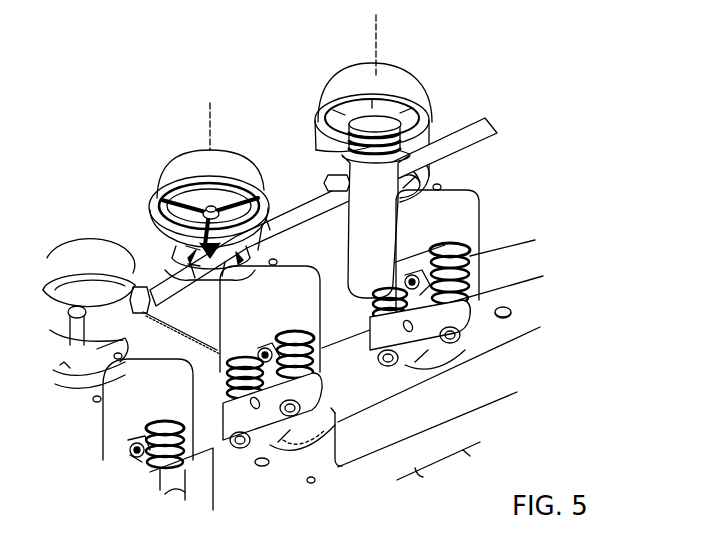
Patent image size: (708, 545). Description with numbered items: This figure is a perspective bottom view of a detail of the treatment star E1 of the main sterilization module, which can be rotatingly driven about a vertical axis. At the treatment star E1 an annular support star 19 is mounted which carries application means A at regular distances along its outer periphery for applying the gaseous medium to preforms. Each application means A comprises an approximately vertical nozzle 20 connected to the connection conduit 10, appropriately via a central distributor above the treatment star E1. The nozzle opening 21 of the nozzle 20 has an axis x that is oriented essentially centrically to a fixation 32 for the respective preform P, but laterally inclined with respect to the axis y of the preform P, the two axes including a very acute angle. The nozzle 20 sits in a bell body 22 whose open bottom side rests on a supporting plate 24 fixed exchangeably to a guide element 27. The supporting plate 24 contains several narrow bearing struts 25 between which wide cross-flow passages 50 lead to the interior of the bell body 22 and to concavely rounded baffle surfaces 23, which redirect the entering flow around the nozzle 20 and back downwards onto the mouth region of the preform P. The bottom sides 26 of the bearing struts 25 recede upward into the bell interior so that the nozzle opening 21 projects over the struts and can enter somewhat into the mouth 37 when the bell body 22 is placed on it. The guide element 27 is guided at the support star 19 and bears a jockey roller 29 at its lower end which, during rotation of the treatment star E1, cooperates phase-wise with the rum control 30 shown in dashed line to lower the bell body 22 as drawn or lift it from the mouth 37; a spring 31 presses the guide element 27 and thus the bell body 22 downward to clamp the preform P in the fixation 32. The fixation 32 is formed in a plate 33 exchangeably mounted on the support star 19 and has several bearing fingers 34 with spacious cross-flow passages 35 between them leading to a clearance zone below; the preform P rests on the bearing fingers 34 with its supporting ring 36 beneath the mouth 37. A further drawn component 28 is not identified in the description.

The connection conduit 10 is at (208, 110).
The support star 19 is at (478, 137).
The nozzle 20 is at (158, 210).
The nozzle opening 21 is at (165, 228).
The bell body 22 is at (172, 163).
The baffle surfaces 23 is at (258, 194).
The supporting plate 24 is at (158, 190).
The bearing struts 25 is at (193, 170).
The bottom sides 26 is at (258, 222).
The guide element 27 is at (475, 285).
The block 28 is at (480, 200).
The jockey roller 29 is at (330, 406).
The rum control 30 is at (284, 462).
The spring 31 is at (470, 250).
The fixation 32 is at (323, 167).
The plate 33 is at (408, 202).
The bearing fingers 34 is at (394, 92).
The cross-flow passages 35 is at (430, 192).
The supporting ring 36 is at (340, 86).
The mouth 37 is at (368, 95).
The cross-flow passages 50 is at (189, 179).
The application means A is at (428, 73).
The preform P is at (362, 236).
The treatment star E1 is at (535, 253).
The axis of the nozzle opening x is at (187, 247).
The axis of the preform y is at (188, 266).